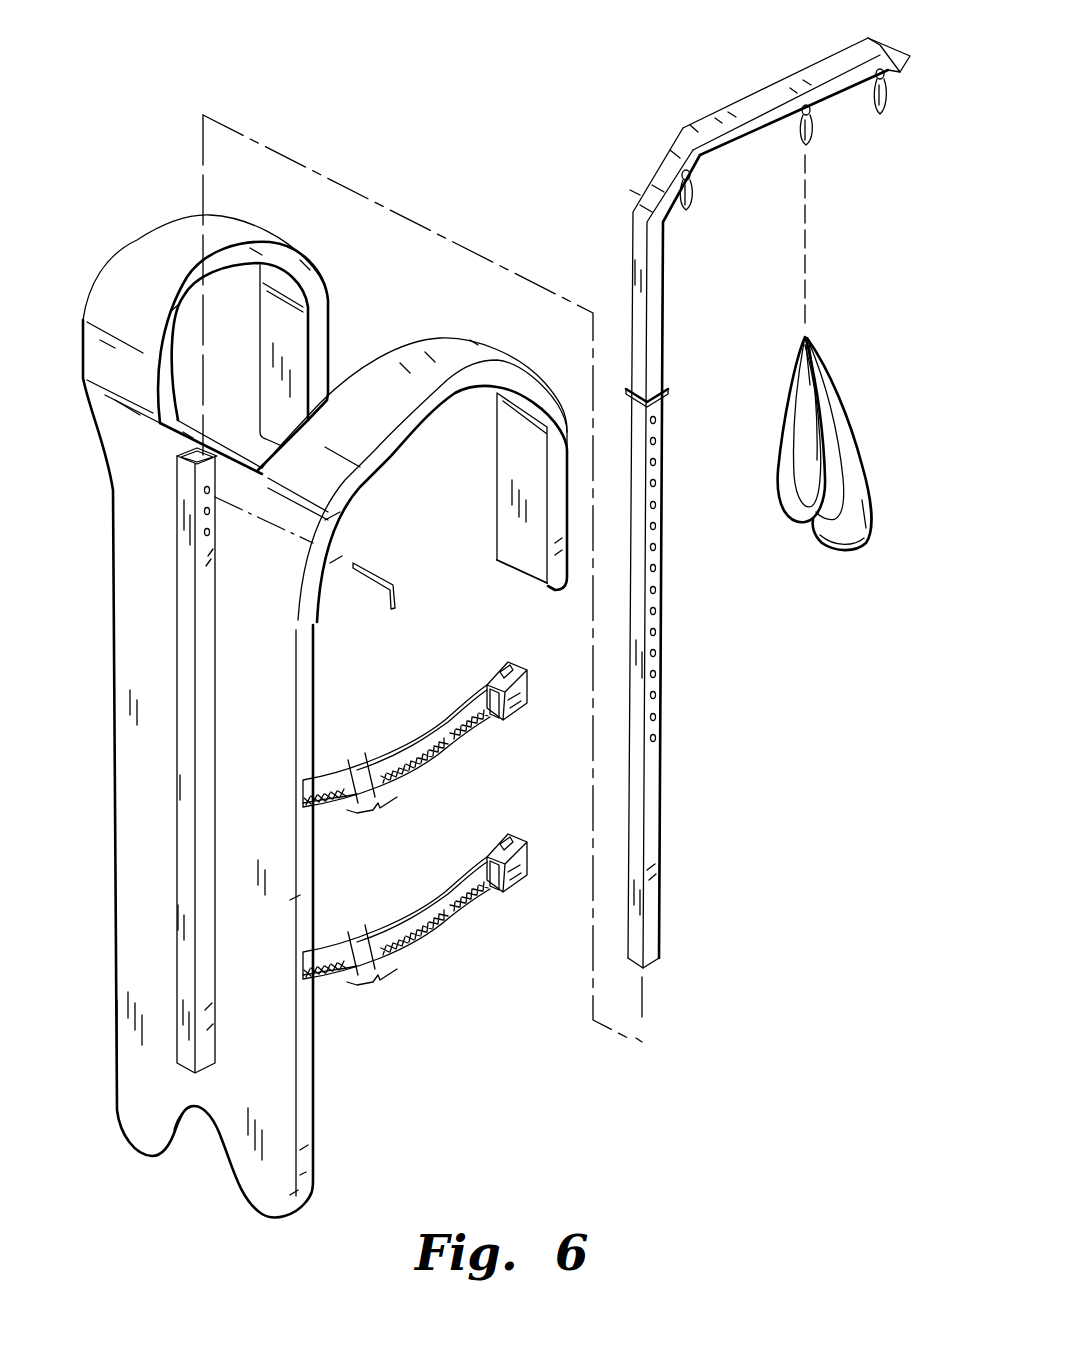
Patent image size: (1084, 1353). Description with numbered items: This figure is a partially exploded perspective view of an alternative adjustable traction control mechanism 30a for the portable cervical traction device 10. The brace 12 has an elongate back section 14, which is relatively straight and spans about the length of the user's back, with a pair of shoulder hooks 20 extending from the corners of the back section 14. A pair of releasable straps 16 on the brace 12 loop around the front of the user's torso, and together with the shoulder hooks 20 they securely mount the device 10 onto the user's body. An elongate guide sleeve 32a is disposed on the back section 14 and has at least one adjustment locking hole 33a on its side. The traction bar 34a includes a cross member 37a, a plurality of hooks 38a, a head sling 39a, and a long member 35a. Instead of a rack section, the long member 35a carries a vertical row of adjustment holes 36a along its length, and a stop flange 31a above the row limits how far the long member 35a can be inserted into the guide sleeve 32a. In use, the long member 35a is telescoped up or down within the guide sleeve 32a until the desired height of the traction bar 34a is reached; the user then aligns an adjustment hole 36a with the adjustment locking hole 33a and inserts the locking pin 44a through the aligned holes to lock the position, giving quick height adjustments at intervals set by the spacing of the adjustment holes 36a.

The portable cervical traction device 10 is at (455, 132).
The brace 12 is at (104, 568).
The back section 14 is at (148, 973).
The releasable straps 16 is at (455, 718).
The shoulder hooks 20 is at (128, 254).
The adjustable traction control mechanism 30a is at (160, 620).
The stop flange 31a is at (668, 392).
The guide sleeve 32a is at (207, 1050).
The adjustment locking hole 33a is at (212, 512).
The traction bar 34a is at (634, 153).
The long member 35a is at (632, 262).
The adjustment holes 36a is at (655, 718).
The cross member 37a is at (855, 42).
The hooks 38a is at (813, 141).
The head sling 39a is at (857, 443).
The locking pin 44a is at (400, 593).